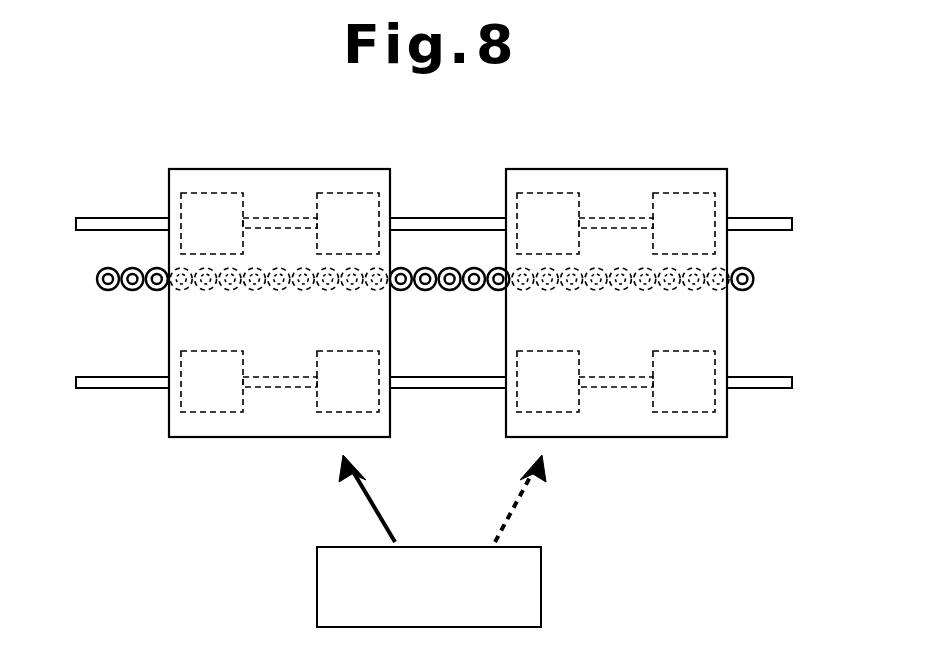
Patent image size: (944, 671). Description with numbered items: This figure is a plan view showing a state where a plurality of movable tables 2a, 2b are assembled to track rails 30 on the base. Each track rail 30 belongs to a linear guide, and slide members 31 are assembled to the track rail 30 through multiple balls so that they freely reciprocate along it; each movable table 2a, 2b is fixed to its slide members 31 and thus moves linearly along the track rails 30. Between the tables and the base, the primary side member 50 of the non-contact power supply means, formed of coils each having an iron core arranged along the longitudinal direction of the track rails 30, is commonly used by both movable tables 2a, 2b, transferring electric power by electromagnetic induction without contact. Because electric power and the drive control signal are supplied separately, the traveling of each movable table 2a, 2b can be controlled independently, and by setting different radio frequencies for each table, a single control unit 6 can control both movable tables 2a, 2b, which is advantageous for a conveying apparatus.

The movable table 2a is at (284, 169).
The movable table 2b is at (622, 169).
The track rail 30 is at (446, 212).
The slide member 31 is at (212, 193).
The primary side member 50 is at (132, 291).
The control unit 6 is at (541, 583).